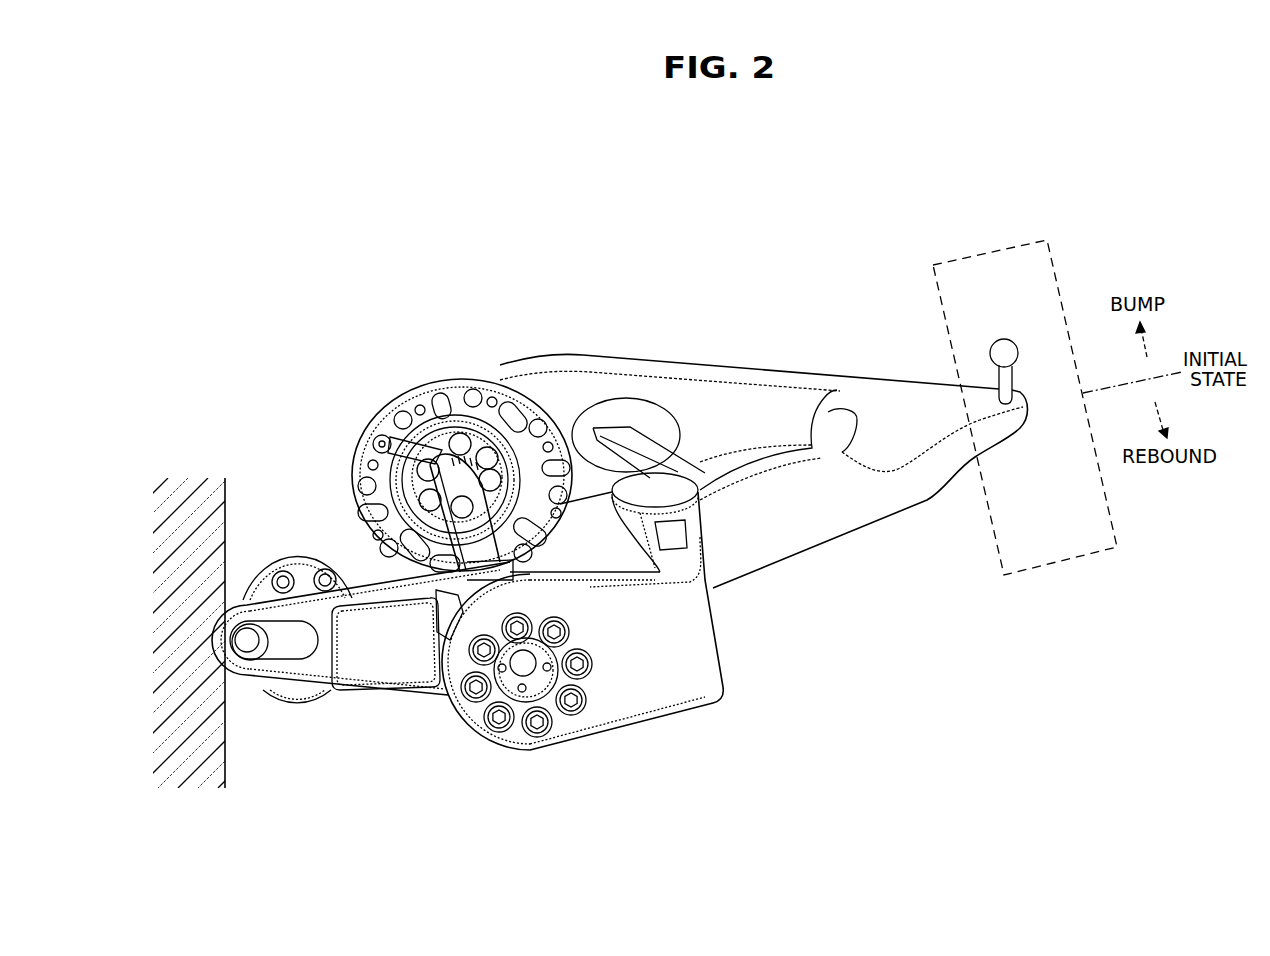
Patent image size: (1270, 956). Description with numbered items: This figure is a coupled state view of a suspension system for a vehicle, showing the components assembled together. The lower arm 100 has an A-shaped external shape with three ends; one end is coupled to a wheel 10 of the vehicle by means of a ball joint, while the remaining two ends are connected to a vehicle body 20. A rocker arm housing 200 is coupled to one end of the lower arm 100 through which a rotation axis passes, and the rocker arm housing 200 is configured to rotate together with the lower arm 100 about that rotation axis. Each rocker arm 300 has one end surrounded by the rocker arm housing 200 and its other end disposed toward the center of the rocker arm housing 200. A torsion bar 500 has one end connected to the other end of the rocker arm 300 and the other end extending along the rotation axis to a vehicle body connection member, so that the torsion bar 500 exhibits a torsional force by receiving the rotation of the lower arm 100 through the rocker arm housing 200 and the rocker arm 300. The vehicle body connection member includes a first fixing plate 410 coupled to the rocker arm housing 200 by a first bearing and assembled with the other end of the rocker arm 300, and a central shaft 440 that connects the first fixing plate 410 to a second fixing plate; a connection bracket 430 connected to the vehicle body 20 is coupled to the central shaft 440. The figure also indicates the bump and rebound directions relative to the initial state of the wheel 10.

The wheel 10 is at (980, 252).
The vehicle body 20 is at (190, 496).
The lower arm 100 is at (835, 512).
The rocker arm housing 200 is at (428, 400).
The rocker arm 300 is at (383, 436).
The first fixing plate 410 is at (508, 452).
The connection bracket 430 is at (385, 658).
The central shaft 440 is at (562, 533).
The torsion bar 500 is at (452, 505).